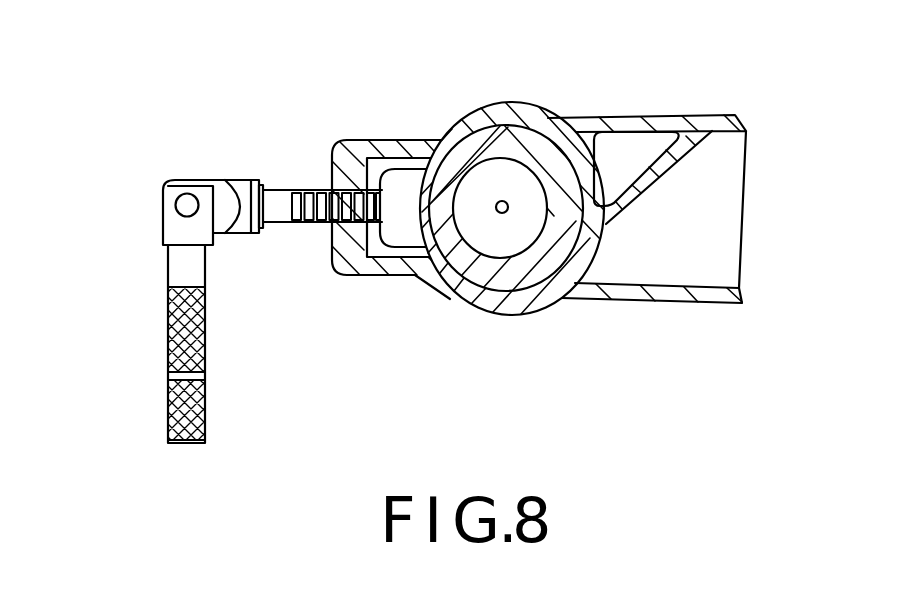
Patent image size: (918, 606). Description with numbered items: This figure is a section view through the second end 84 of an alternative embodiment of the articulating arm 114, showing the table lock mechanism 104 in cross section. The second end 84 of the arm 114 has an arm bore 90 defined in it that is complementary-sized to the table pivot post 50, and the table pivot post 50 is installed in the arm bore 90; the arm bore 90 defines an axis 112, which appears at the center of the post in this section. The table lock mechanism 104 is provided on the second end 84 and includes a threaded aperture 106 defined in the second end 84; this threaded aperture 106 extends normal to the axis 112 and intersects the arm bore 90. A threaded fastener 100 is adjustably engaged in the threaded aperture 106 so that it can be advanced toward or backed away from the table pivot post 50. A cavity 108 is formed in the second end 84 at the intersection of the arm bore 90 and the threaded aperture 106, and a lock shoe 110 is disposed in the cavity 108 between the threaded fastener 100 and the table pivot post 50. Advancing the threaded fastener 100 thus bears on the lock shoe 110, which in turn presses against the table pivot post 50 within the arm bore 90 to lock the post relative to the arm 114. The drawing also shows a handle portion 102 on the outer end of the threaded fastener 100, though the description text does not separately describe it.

The table pivot post 50 is at (535, 148).
The second end 84 is at (477, 110).
The arm bore 90 is at (476, 287).
The threaded fastener 100 is at (275, 193).
The handle lever 102 is at (170, 400).
The table lock mechanism 104 is at (322, 138).
The threaded aperture 106 is at (332, 223).
The cavity 108 is at (375, 156).
The lock shoe 110 is at (407, 182).
The axis 112 is at (632, 247).
The articulating arm 114 is at (733, 115).